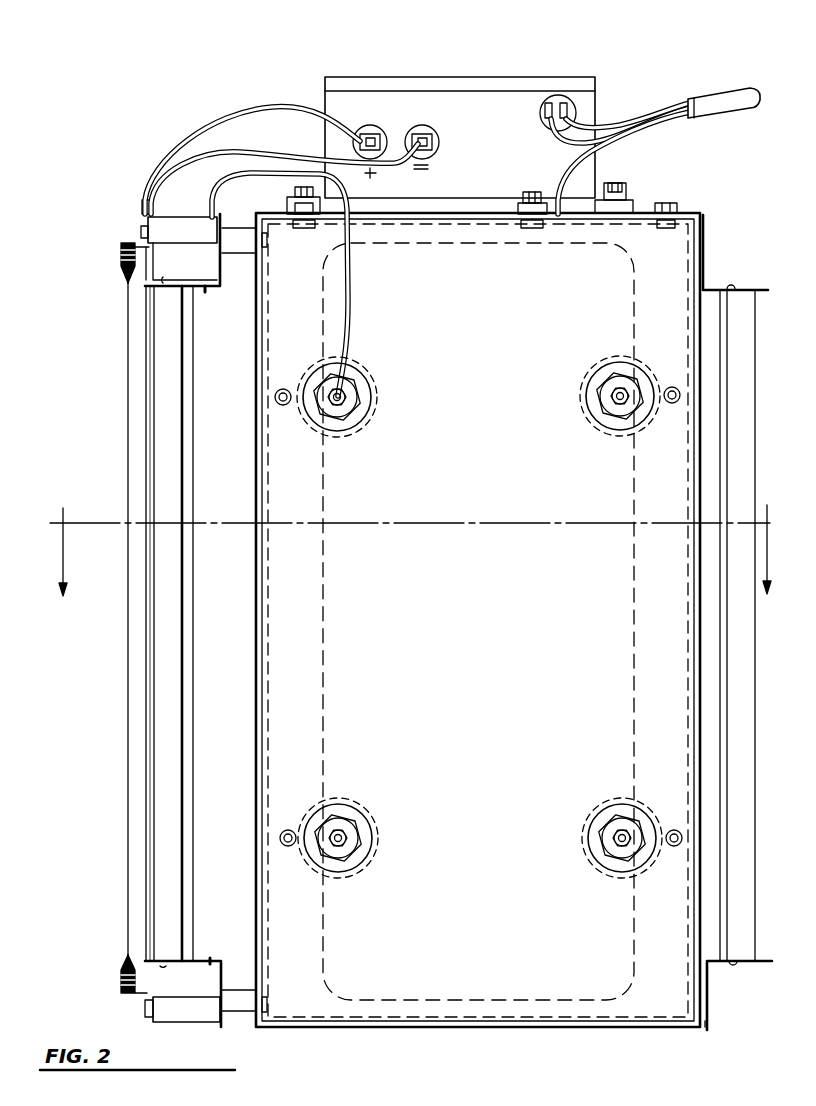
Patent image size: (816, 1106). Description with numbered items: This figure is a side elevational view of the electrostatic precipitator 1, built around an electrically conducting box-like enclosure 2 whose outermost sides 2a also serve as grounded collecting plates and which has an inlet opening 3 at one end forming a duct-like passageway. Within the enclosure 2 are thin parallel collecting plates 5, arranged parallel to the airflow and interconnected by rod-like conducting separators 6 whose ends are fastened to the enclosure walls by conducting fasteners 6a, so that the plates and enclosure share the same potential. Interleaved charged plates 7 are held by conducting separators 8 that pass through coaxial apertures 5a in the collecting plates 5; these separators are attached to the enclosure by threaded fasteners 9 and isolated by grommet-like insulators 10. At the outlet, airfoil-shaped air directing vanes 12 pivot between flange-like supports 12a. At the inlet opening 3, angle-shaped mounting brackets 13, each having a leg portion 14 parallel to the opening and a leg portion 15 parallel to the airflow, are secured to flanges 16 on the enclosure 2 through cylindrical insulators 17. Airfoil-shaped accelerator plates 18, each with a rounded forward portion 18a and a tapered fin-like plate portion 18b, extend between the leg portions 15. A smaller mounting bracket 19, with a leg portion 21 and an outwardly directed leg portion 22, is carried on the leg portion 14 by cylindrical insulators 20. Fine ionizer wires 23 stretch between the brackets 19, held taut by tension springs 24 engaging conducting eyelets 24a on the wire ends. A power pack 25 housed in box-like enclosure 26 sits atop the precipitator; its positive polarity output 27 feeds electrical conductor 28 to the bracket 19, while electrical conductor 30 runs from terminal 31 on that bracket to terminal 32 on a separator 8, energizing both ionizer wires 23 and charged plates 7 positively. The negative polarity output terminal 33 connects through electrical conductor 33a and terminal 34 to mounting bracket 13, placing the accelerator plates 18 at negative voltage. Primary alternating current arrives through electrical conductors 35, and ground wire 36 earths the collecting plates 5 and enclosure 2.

The electrostatic precipitator 1 is at (305, 48).
The box-like enclosure 2 is at (675, 728).
The outermost sides of enclosure 2a is at (500, 661).
The inlet opening 3 is at (421, 563).
The collecting plate 5 is at (268, 613).
The coaxial aperture 5a is at (362, 365).
The conducting separator 6 is at (283, 405).
The electrically conducting fastener 6a is at (283, 389).
The charged plate 7 is at (325, 637).
The conducting separator 8 is at (338, 402).
The threaded fastener 9 is at (347, 398).
The grommet-like insulator 10 is at (353, 418).
The air directing vane 12 is at (747, 330).
The flange-like support 12a is at (764, 287).
The mounting bracket 13 is at (205, 297).
The leg portion 14 is at (222, 270).
The leg portion 15 is at (188, 282).
The flange 16 is at (262, 478).
The cylindrical insulator 17 is at (236, 228).
The accelerator plate 18 is at (163, 450).
The rounded forward portion 18a is at (148, 645).
The tapered fin-like plate portion 18b is at (188, 588).
The mounting bracket 19 is at (143, 247).
The cylindrical insulator 20 is at (157, 218).
The leg portion 21 is at (147, 252).
The leg portion 22 is at (142, 247).
The ionizer wire 23 is at (128, 405).
The tension spring 24 is at (122, 260).
The electrically conducting eyelet 24a is at (125, 283).
The power pack 25 is at (382, 70).
The box-like enclosure 26 is at (505, 77).
The positive polarity output 27 is at (380, 130).
The electrical conductor 28 is at (248, 80).
The electrical conductor 30 is at (183, 160).
The terminal 31 is at (143, 210).
The terminal 32 is at (343, 378).
The negative polarity output terminal 33 is at (440, 140).
The electrical conductor 33a is at (392, 162).
The terminal 34 is at (212, 228).
The electrical conductors 35 is at (613, 130).
The ground wire 36 is at (645, 143).